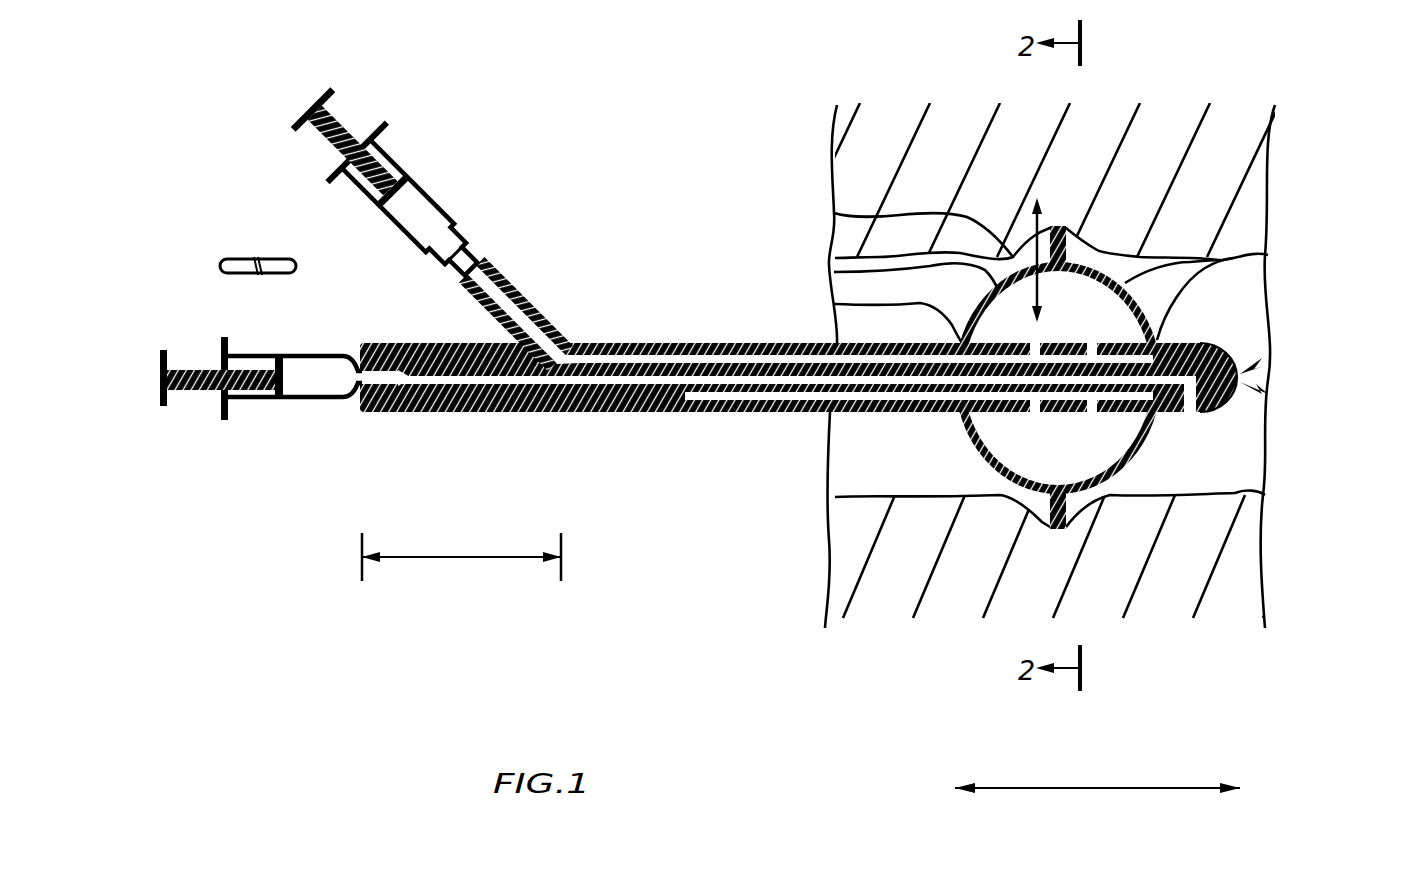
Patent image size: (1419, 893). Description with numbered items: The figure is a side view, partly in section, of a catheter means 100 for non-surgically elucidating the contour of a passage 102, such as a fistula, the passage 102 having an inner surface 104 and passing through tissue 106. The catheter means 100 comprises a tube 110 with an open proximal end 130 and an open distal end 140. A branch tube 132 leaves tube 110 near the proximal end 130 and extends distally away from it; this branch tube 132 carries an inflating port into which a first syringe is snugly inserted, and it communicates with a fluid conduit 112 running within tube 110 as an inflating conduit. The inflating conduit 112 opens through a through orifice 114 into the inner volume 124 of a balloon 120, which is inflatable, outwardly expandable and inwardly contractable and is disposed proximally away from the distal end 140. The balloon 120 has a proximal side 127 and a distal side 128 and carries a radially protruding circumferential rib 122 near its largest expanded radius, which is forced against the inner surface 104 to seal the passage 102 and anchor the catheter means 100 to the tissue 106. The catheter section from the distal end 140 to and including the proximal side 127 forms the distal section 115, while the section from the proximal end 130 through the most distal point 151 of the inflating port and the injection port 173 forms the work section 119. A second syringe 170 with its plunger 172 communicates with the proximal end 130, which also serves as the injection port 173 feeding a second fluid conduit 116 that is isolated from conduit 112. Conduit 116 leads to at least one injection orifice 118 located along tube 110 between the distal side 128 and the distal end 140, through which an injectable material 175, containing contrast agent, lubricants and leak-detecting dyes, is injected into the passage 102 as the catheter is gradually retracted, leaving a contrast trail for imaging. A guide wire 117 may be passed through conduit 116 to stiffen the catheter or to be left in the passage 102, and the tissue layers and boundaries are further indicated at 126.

The catheter means 100 is at (742, 273).
The passage 102 is at (1258, 455).
The inner surface 104 is at (1243, 498).
The tissue 106 is at (1233, 560).
The tube 110 is at (854, 352).
The fluid conduit 112 is at (705, 345).
The through orifice 114 is at (1092, 342).
The distal section 115 is at (1097, 774).
The fluid conduit 116 is at (430, 412).
The guide wire 117 is at (234, 266).
The injection orifice 118 is at (1240, 377).
The work section 119 is at (461, 554).
The balloon 120 is at (834, 272).
The circumferential rib 122 is at (1062, 225).
The inner volume 124 is at (834, 213).
The tissue outer surface 126 is at (1262, 163).
The proximal side 127 is at (834, 304).
The distal side 128 is at (1217, 260).
The proximal end 130 is at (360, 412).
The tube 132 is at (530, 290).
The distal end 140 is at (1233, 347).
The point 151 is at (575, 347).
The second syringe 170 is at (272, 398).
The plunger 172 is at (165, 405).
The injection port 173 is at (345, 405).
The injectable material 175 is at (322, 372).